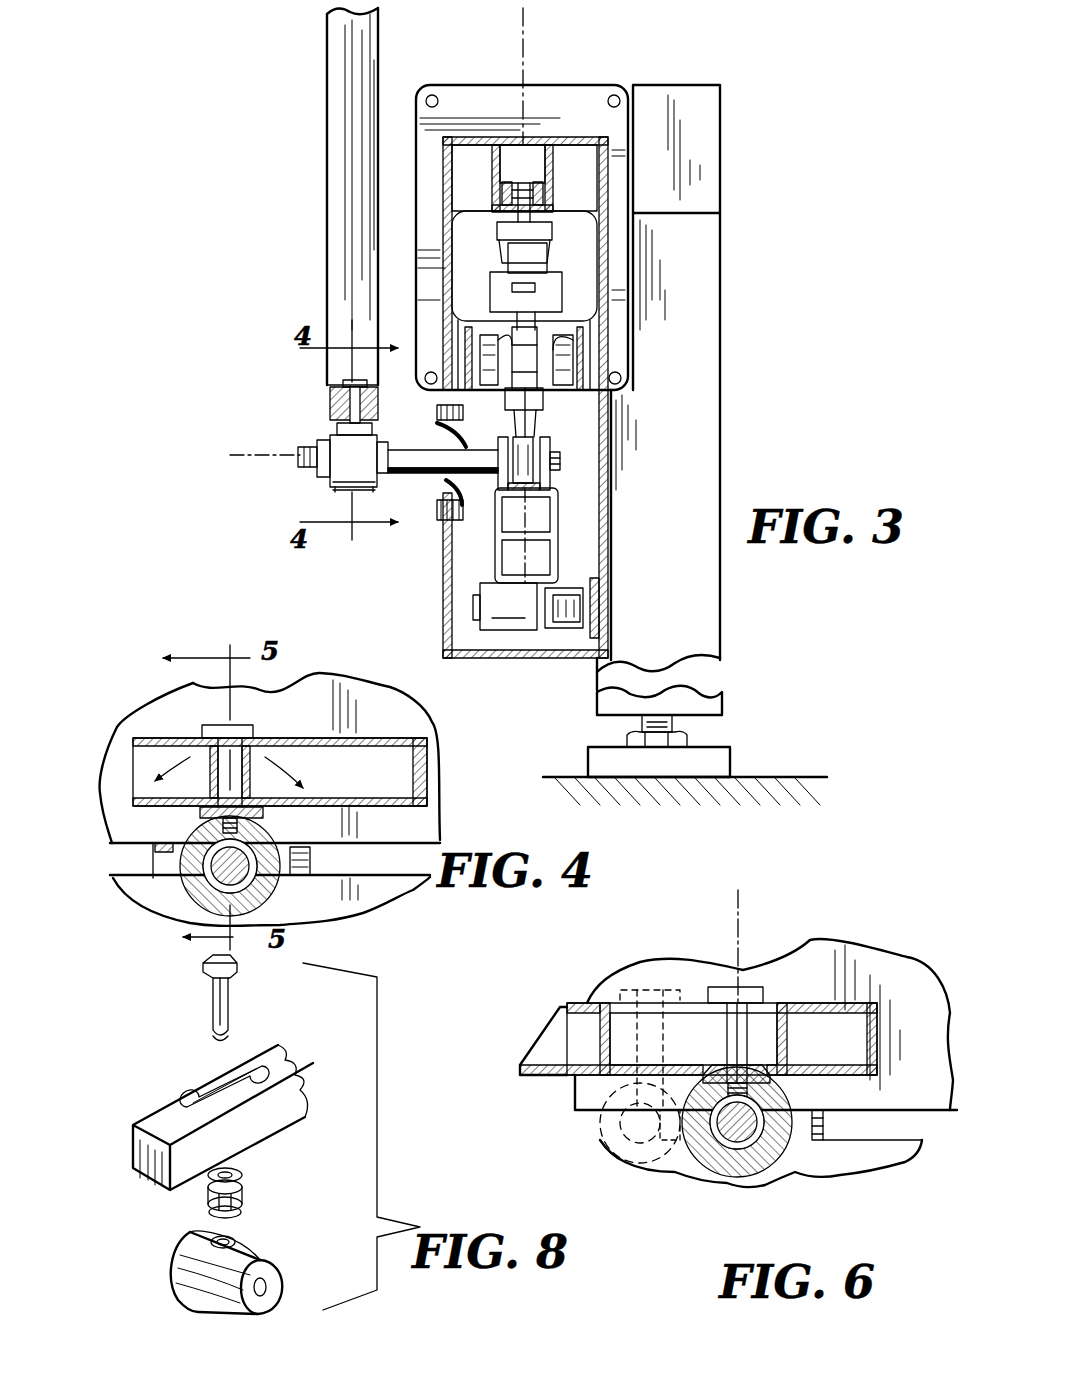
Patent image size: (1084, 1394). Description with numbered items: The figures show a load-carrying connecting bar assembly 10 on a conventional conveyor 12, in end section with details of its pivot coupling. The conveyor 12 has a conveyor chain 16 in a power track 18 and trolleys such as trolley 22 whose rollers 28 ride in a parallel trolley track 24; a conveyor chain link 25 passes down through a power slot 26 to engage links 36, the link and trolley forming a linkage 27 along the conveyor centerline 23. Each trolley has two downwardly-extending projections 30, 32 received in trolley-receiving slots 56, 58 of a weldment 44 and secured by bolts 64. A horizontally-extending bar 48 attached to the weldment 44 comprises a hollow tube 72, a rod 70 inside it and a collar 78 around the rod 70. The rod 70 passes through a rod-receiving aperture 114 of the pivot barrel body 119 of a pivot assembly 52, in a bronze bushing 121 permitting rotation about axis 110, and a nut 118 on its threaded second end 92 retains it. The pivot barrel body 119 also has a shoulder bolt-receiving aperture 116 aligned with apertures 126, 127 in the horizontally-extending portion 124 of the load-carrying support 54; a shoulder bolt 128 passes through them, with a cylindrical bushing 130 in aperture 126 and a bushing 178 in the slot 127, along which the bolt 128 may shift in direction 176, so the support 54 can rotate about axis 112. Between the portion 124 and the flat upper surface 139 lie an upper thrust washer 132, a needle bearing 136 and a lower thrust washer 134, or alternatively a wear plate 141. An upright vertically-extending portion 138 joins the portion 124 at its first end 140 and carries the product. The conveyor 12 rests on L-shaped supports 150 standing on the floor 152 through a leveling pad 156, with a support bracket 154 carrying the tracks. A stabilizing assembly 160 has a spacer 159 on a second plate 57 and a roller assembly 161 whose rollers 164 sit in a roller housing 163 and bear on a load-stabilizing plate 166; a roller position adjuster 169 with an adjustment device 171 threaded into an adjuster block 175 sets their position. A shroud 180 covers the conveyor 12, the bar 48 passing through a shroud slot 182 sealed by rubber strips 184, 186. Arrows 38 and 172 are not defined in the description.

In FIG. 3, the load-carrying connecting bar assembly 10 is at (253, 188).
In FIG. 3, the conveyor 12 is at (636, 178).
In FIG. 3, the conveyor chain 16 is at (537, 150).
In FIG. 3, the power track 18 is at (492, 172).
In FIG. 3, the trolley 22 is at (567, 362).
In FIG. 3, the centerline 23 is at (505, 60).
In FIG. 3, the trolley track 24 is at (587, 368).
In FIG. 3, the conveyor chain link 25 is at (560, 225).
In FIG. 3, the power slot 26 is at (497, 218).
In FIG. 3, the linkage 27 is at (480, 270).
In FIG. 3, the rollers 28 is at (560, 362).
In FIG. 3, the downwardly-extending projection 30 is at (538, 440).
In FIG. 3, the downwardly-extending projection 32 is at (525, 480).
In FIG. 3, the links 36 is at (535, 256).
In FIG. 3, the direction of movement 38 is at (568, 465).
In FIG. 3, the second weldment 44 is at (525, 498).
In FIG. 3, the second horizontally-extending bar 48 is at (421, 500).
In FIG. 4, the second horizontally-extending bar 48 is at (213, 880).
In FIG. 6, the second horizontally-extending bar 48 is at (735, 1143).
In FIG. 3, the pivot assembly 52 is at (332, 490).
In FIG. 4, the pivot assembly 52 is at (187, 883).
In FIG. 6, the pivot assembly 52 is at (613, 1181).
In FIG. 8, the pivot assembly 52 is at (295, 1292).
In FIG. 3, the load-carrying support 54 is at (302, 142).
In FIG. 4, the load-carrying support 54 is at (415, 733).
In FIG. 6, the load-carrying support 54 is at (857, 970).
In FIG. 3, the trolley-receiving slot 56 is at (560, 470).
In FIG. 3, the second plate 57 is at (492, 495).
In FIG. 3, the trolley-receiving slot 58 is at (512, 440).
In FIG. 3, the bolts 64 is at (555, 450).
In FIG. 3, the rod 70 is at (312, 468).
In FIG. 4, the rod 70 is at (310, 905).
In FIG. 6, the rod 70 is at (745, 1142).
In FIG. 3, the hollow tube 72 is at (359, 463).
In FIG. 3, the collar 78 is at (381, 482).
In FIG. 3, the second end 92 is at (317, 447).
In FIG. 3, the axes 110 is at (238, 455).
In FIG. 4, the axes 110 is at (236, 862).
In FIG. 6, the axes 110 is at (693, 1170).
In FIG. 3, the axes 112 is at (330, 386).
In FIG. 4, the axes 112 is at (232, 700).
In FIG. 6, the axes 112 is at (748, 912).
In FIG. 8, the axes 112 is at (215, 1079).
In FIG. 6, the horizontally-extending rod-receiving aperture 114 is at (792, 1122).
In FIG. 8, the horizontally-extending rod-receiving aperture 114 is at (266, 1294).
In FIG. 4, the shoulder bolt-receiving aperture 116 is at (258, 830).
In FIG. 8, the shoulder bolt-receiving aperture 116 is at (238, 1244).
In FIG. 3, the nut 118 is at (340, 428).
In FIG. 3, the pivot barrel body 119 is at (340, 493).
In FIG. 4, the pivot barrel body 119 is at (313, 867).
In FIG. 6, the pivot barrel body 119 is at (777, 1140).
In FIG. 8, the pivot barrel body 119 is at (195, 1278).
In FIG. 4, the bushing 121 is at (280, 893).
In FIG. 6, the bushing 121 is at (757, 1148).
In FIG. 3, the horizontally-extending portion 124 is at (330, 392).
In FIG. 4, the horizontally-extending portion 124 is at (440, 832).
In FIG. 4, the shoulder bolt-receiving aperture 126 is at (300, 738).
In FIG. 6, the shoulder bolt-receiving slot 127 is at (686, 1004).
In FIG. 8, the shoulder bolt-receiving slot 127 is at (262, 1097).
In FIG. 3, the shoulder bolt 128 is at (368, 390).
In FIG. 4, the shoulder bolt 128 is at (203, 727).
In FIG. 6, the shoulder bolt 128 is at (762, 1003).
In FIG. 8, the shoulder bolt 128 is at (210, 1016).
In FIG. 4, the cylindrical bushing 130 is at (200, 800).
In FIG. 6, the cylindrical bushing 130 is at (792, 1030).
In FIG. 8, the upper thrust washer 132 is at (242, 1178).
In FIG. 8, the lower thrust washer 134 is at (243, 1213).
In FIG. 4, the needle bearing 136 is at (231, 820).
In FIG. 8, the needle bearing 136 is at (208, 1198).
In FIG. 3, the upright vertically-extending portion 138 is at (327, 275).
In FIG. 4, the flat upper surface 139 is at (255, 832).
In FIG. 6, the flat upper surface 139 is at (770, 1088).
In FIG. 8, the flat upper surface 139 is at (200, 1236).
In FIG. 3, the first end 140 is at (345, 390).
In FIG. 6, the wear plate 141 is at (720, 1075).
In FIG. 3, the L-shaped supports 150 is at (732, 443).
In FIG. 3, the floor 152 is at (797, 775).
In FIG. 3, the support bracket 154 is at (468, 95).
In FIG. 3, the leveling pad 156 is at (712, 757).
In FIG. 3, the spacer 159 is at (562, 540).
In FIG. 3, the stabilizing assembly 160 is at (618, 618).
In FIG. 3, the roller assembly 161 is at (616, 593).
In FIG. 3, the roller housing 163 is at (556, 628).
In FIG. 3, the rollers 164 is at (577, 607).
In FIG. 3, the load-stabilizing plate 166 is at (582, 640).
In FIG. 3, the roller position adjuster 169 is at (520, 657).
In FIG. 3, the adjustment device 171 is at (478, 627).
In FIG. 8, the direction of assembly 172 is at (250, 1130).
In FIG. 3, the adjuster block 175 is at (505, 606).
In FIG. 6, the direction 176 is at (720, 933).
In FIG. 6, the bushing 178 is at (587, 1033).
In FIG. 8, the bushing 178 is at (187, 1112).
In FIG. 3, the shroud 180 is at (608, 140).
In FIG. 3, the shroud slot 182 is at (443, 459).
In FIG. 3, the rubber strip 184 is at (438, 420).
In FIG. 3, the rubber strip 186 is at (446, 520).